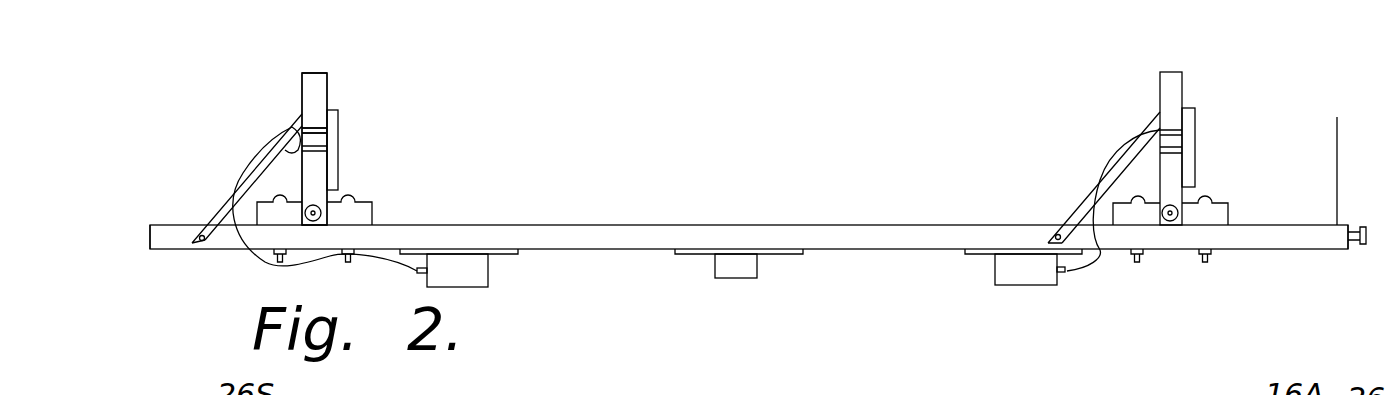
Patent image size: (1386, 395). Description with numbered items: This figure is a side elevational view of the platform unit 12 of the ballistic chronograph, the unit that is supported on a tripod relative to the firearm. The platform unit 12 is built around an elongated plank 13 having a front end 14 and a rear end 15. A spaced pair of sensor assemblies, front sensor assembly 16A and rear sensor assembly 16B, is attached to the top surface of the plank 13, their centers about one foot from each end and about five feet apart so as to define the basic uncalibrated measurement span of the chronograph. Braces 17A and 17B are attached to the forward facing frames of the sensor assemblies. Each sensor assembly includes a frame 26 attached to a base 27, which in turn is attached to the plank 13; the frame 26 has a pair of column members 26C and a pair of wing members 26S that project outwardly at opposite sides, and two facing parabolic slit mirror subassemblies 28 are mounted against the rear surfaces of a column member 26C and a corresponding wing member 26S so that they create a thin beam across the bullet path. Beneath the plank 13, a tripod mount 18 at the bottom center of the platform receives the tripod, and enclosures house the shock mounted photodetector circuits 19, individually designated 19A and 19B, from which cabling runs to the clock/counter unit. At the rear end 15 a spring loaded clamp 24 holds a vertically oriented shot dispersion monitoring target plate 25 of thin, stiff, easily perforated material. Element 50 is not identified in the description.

The platform unit 12 is at (670, 304).
The plank 13 is at (583, 225).
The front end 14 is at (150, 249).
The rear end 15 is at (1340, 254).
The front sensor assembly 16A is at (327, 97).
The rear sensor assembly 16B is at (1160, 93).
The brace 17A is at (227, 215).
The brace 17B is at (1073, 210).
The tripod mount 18 is at (757, 278).
The photodetector circuit 19 is at (488, 287).
The photodetector circuit 19A is at (417, 272).
The photodetector circuit 19B is at (1063, 273).
The spring loaded clamp 24 is at (1340, 250).
The shot dispersion monitoring target plate 25 is at (1335, 128).
The frame 26 is at (315, 73).
The column member 26C is at (302, 80).
The wing member 26S is at (292, 135).
The base 27 is at (372, 202).
The parabolic slit mirror subassembly 28 is at (338, 156).
The cable 50 is at (238, 168).